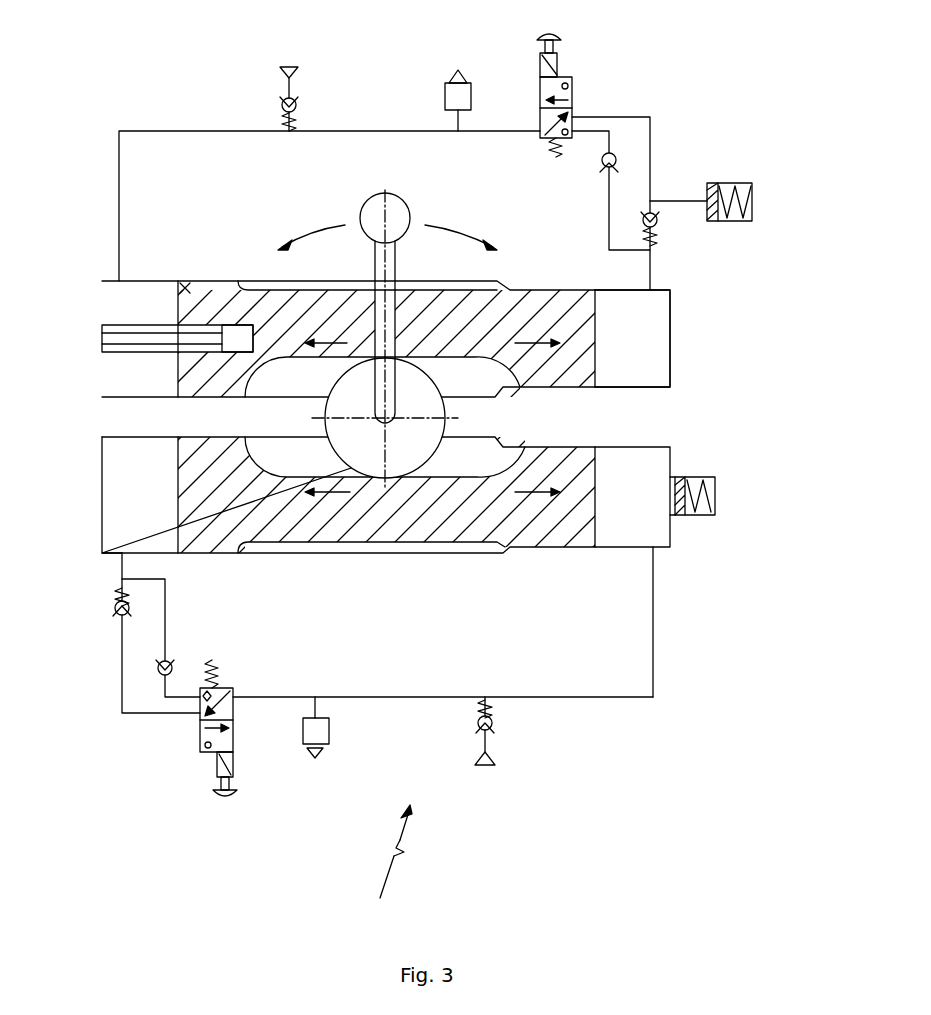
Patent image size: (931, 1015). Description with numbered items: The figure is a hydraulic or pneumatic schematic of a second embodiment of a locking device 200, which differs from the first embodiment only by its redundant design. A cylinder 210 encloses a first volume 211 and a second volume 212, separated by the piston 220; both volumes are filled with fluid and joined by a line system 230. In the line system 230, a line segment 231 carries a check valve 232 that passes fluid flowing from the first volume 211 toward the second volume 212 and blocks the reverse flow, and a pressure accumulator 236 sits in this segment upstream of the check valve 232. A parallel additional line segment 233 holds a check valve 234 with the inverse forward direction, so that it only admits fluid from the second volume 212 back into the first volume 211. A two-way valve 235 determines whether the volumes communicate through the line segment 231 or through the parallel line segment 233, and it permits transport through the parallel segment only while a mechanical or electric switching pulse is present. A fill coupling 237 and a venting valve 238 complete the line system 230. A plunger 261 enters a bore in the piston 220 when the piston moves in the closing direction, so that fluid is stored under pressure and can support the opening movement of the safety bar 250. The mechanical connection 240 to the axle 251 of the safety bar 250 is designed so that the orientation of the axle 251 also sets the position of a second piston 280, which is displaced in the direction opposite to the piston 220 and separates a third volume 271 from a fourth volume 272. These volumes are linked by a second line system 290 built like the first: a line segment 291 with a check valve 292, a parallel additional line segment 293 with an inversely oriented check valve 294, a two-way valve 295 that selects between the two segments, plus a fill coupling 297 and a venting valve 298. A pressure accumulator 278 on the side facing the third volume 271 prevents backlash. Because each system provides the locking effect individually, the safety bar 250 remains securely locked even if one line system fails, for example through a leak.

The locking device 200 is at (386, 866).
The cylinder 210 is at (465, 336).
The first volume 211 is at (120, 283).
The second volume 212 is at (670, 342).
The piston 220 is at (185, 288).
The line system 230 is at (185, 131).
The line segment 231 is at (632, 117).
The check valve 232 is at (657, 222).
The additional line segment 233 is at (588, 130).
The check valve 234 is at (620, 155).
The two-way valve 235 is at (557, 76).
The pressure accumulator 236 is at (746, 182).
The fill coupling 237 is at (279, 84).
The venting valve 238 is at (441, 87).
The mechanical connection 240 is at (433, 402).
The safety bar 250 is at (508, 269).
The axle 251 is at (440, 435).
The plunger 261 is at (103, 330).
The third volume 271 is at (667, 533).
The fourth volume 272 is at (103, 553).
The pressure accumulator 278 is at (713, 512).
The second piston 280 is at (653, 632).
The second line system 290 is at (653, 699).
The line segment 291 is at (121, 677).
The check valve 292 is at (117, 615).
The additional line segment 293 is at (193, 694).
The check valve 294 is at (160, 677).
The two-way valve 295 is at (230, 743).
The fill coupling 297 is at (493, 730).
The venting valve 298 is at (328, 731).